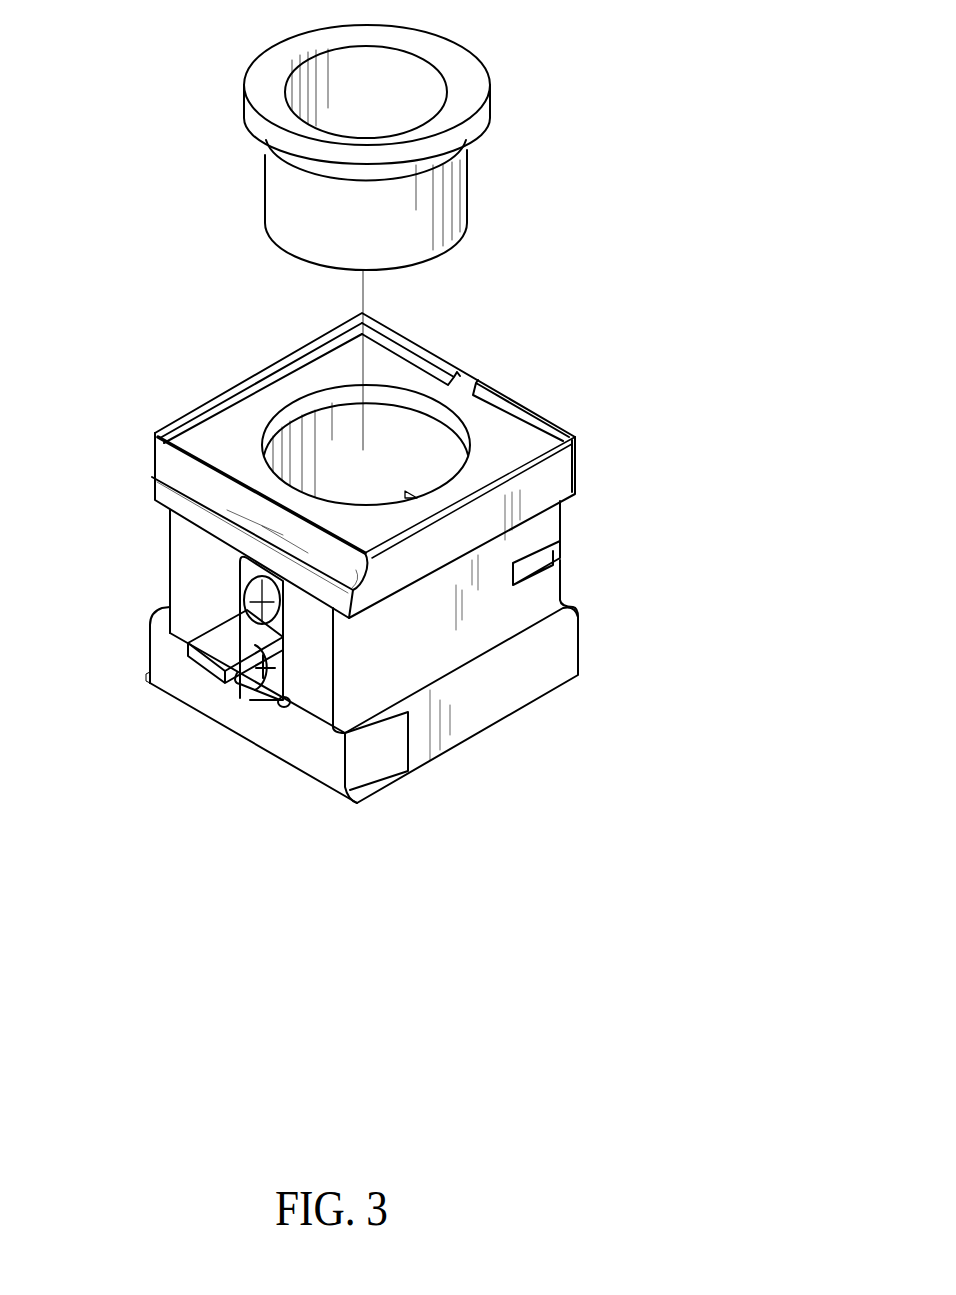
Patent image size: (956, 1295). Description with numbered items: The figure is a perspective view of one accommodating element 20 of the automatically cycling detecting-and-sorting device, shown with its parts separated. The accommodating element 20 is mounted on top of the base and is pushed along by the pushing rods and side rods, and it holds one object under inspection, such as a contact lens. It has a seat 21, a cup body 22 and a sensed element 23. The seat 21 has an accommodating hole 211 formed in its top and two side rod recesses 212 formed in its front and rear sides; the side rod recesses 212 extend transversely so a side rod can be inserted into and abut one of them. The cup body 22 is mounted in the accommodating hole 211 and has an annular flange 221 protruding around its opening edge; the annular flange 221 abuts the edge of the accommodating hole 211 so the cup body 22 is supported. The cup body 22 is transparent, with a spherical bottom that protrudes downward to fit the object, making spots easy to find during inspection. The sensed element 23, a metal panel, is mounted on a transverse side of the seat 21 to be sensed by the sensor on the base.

The accommodating element 20 is at (375, 410).
The seat 21 is at (375, 558).
The accommodating hole 211 is at (305, 413).
The side rod recess 212 is at (168, 520).
The cup body 22 is at (412, 144).
The annular flange 221 is at (447, 63).
The sensed element 23 is at (238, 607).